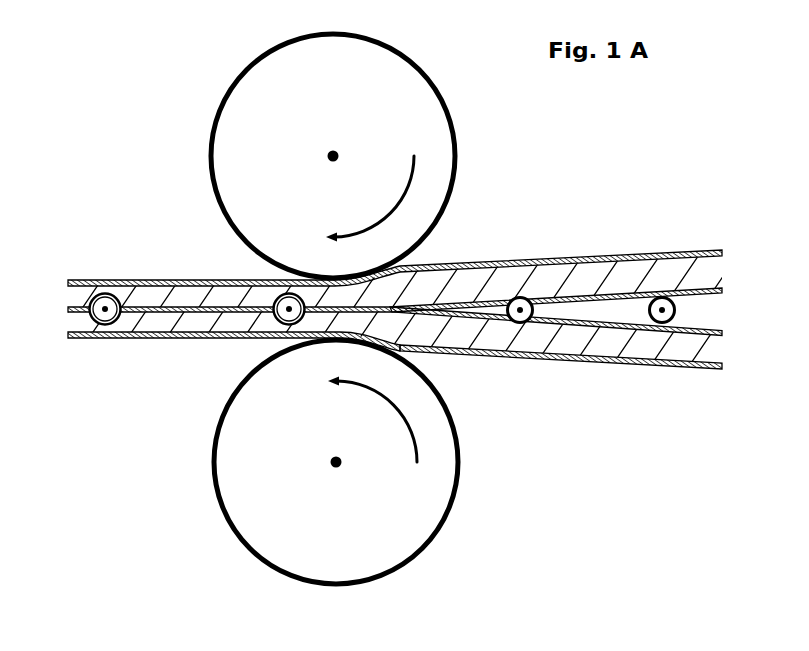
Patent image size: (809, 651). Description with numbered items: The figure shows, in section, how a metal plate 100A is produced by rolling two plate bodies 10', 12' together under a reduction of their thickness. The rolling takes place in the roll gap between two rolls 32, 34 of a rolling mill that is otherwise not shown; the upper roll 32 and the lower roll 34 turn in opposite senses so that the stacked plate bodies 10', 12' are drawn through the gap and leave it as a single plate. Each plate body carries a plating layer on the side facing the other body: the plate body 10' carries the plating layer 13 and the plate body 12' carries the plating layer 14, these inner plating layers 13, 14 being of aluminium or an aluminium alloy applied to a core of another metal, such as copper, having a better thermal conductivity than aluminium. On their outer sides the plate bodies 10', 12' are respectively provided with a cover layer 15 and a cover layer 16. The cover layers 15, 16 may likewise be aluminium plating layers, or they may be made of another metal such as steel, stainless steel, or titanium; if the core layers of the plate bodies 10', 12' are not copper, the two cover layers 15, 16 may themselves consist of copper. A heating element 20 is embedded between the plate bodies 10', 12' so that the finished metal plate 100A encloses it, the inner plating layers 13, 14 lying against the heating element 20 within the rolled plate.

The roll 32 is at (428, 118).
The roll 34 is at (408, 523).
The plate body 10' is at (392, 252).
The plate body 12' is at (397, 361).
The plating layer 13 is at (722, 291).
The plating layer 14 is at (722, 335).
The cover layer 15 is at (574, 257).
The cover layer 16 is at (565, 363).
The heating element 20 is at (673, 337).
The metal plate 100A is at (120, 362).